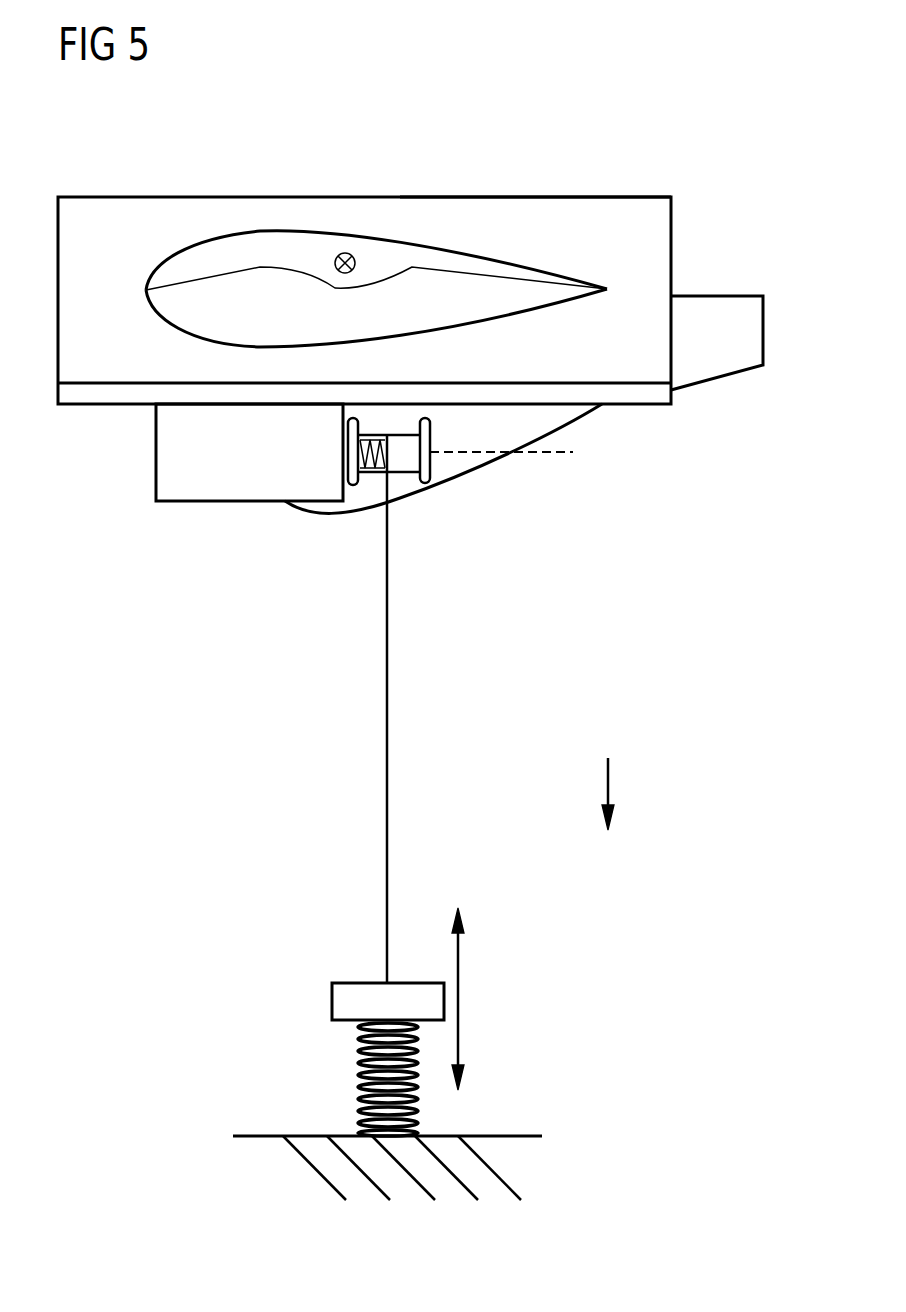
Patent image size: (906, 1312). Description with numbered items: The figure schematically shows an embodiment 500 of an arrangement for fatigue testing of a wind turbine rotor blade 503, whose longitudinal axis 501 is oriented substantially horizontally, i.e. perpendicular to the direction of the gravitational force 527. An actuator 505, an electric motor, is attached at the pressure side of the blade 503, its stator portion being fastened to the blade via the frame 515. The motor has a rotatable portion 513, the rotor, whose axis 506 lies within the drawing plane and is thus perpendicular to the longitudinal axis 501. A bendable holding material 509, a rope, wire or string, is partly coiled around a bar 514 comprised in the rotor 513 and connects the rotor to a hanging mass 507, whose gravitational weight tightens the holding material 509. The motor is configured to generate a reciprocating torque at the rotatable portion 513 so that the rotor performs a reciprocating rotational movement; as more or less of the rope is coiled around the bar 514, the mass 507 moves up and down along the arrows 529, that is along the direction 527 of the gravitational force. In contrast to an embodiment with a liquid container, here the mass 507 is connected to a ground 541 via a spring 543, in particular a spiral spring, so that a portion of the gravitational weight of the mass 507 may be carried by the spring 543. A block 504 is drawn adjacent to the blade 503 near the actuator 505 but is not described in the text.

The embodiment of arrangement for fatigue testing 500 is at (570, 690).
The longitudinal axis 501 is at (345, 252).
The rotor blade 503 is at (258, 140).
The actuator / mounting block 504 is at (163, 452).
The actuator 505 is at (240, 523).
The axis 506 is at (552, 456).
The mass 507 is at (332, 1003).
The bendable holding material 509 is at (390, 828).
The rotatable portion 513 is at (353, 490).
The bar 514 is at (397, 462).
The frame 515 is at (545, 206).
The direction of gravitational force 527 is at (610, 785).
The arrows 529 is at (461, 1000).
The ground 541 is at (505, 1135).
The spring 543 is at (357, 1072).